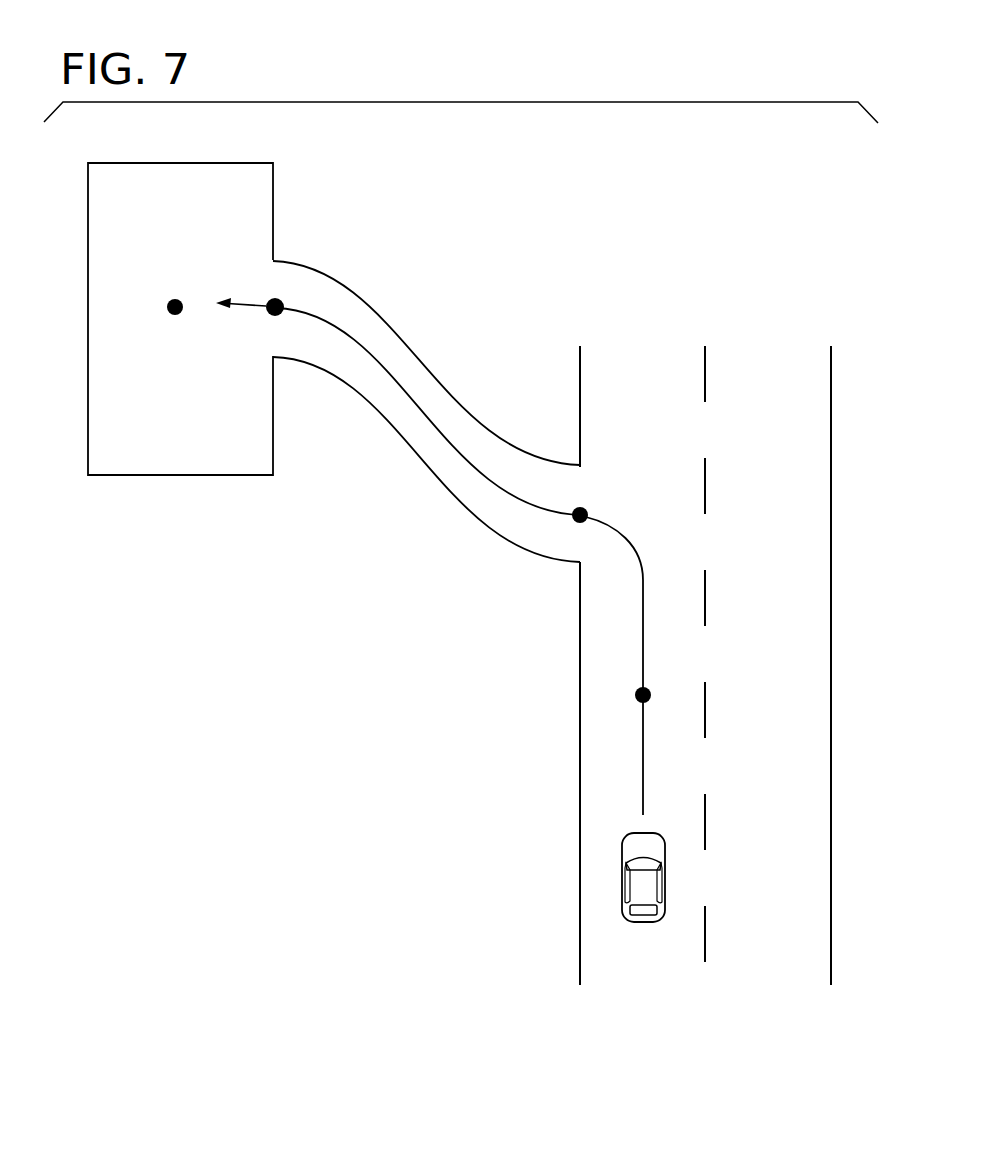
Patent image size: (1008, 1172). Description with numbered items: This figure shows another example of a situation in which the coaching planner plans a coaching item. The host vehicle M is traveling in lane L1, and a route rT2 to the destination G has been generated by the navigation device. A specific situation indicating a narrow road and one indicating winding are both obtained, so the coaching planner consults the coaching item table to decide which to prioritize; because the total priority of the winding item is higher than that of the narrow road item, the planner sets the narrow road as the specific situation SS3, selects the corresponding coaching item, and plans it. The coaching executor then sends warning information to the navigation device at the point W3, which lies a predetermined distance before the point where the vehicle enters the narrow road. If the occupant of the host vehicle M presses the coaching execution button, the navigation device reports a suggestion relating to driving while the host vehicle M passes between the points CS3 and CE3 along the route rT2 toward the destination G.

The destination G is at (166, 306).
The point CE3 is at (278, 298).
The specific situation SS3 is at (407, 463).
The point CS3 is at (585, 511).
The point W3 is at (635, 692).
The route rT2 is at (643, 773).
The host vehicle M is at (623, 875).
The lane L1 is at (657, 985).